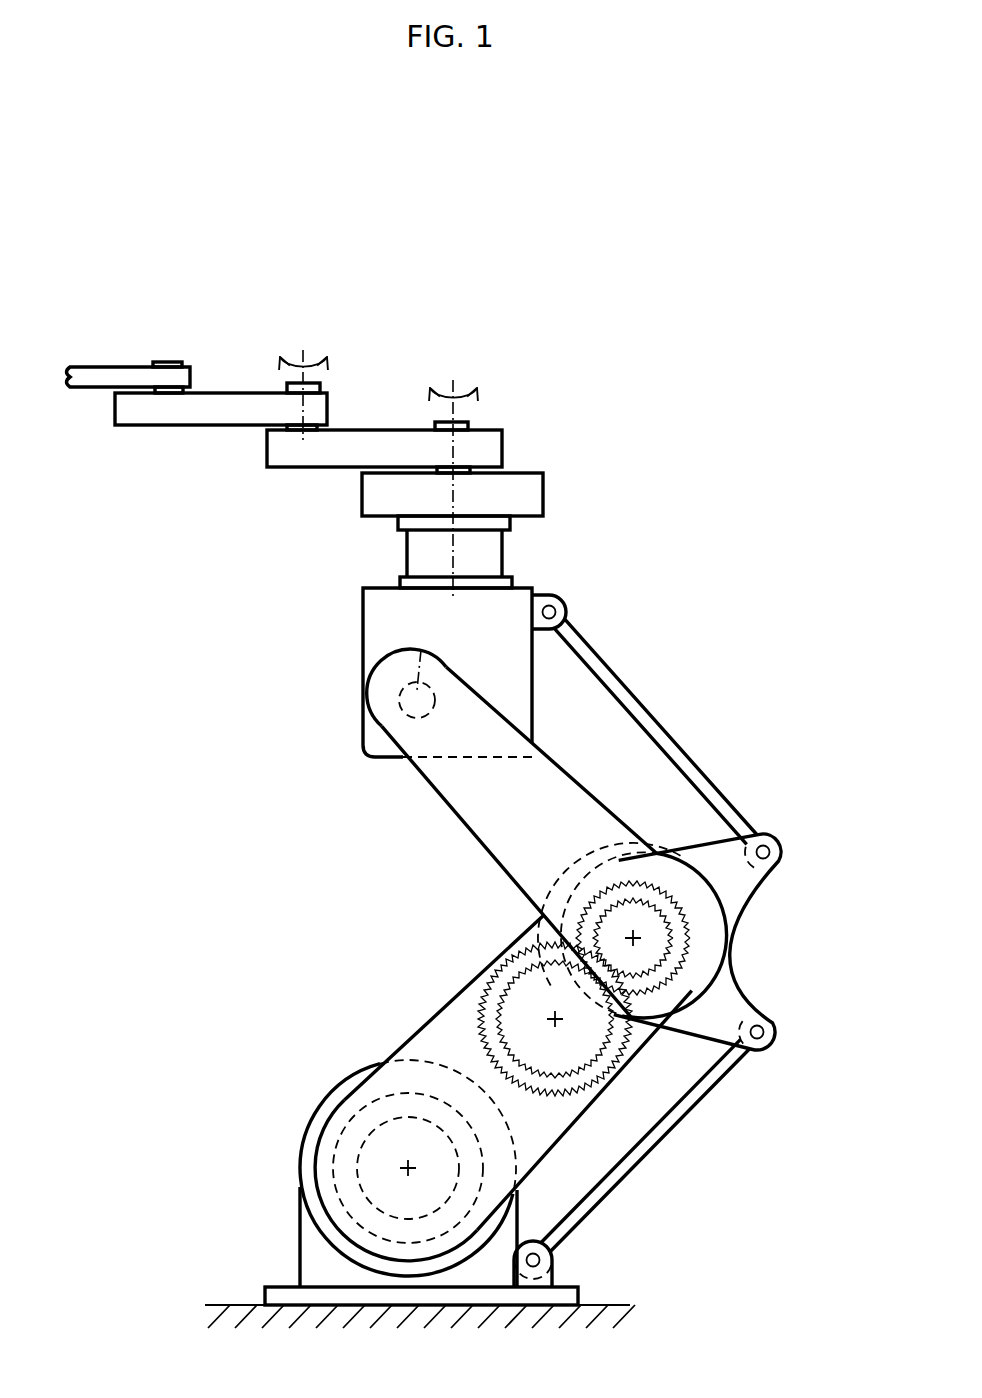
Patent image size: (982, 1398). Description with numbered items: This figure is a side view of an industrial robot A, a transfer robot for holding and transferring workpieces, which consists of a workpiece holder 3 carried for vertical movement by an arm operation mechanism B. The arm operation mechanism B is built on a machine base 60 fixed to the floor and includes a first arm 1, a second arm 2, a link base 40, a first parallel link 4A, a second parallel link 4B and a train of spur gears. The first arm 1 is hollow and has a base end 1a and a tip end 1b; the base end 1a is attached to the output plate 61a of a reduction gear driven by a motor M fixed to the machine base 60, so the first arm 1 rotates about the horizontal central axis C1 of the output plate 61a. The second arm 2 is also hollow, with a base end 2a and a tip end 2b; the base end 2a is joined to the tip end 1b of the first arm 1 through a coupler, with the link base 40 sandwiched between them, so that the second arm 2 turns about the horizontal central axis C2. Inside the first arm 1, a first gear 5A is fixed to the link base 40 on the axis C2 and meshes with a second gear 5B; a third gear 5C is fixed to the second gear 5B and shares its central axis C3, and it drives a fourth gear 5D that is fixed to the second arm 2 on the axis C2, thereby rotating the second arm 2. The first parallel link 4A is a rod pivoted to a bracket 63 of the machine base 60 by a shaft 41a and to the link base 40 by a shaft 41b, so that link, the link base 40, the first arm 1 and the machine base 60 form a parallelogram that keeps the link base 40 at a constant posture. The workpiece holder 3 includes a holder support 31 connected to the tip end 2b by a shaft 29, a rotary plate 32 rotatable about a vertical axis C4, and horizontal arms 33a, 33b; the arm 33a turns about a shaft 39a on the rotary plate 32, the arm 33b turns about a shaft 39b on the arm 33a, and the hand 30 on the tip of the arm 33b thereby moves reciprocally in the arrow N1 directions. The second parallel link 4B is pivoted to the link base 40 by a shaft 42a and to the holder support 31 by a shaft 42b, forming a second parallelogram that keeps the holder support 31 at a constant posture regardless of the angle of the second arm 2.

The hand 30 is at (102, 366).
The arrow directions N1 is at (220, 345).
The horizontal arm 33b is at (240, 393).
The shaft 39b is at (320, 378).
The vertically extending axis C4 is at (460, 388).
The shaft 39a is at (468, 422).
The industrial robot A is at (630, 400).
The horizontal arm 33a is at (500, 441).
The rotary plate 32 is at (540, 492).
The shaft 42b is at (562, 604).
The workpiece holder 3 is at (356, 607).
The shaft 29 is at (429, 666).
The holder support 31 is at (372, 640).
The tip end 2b is at (440, 684).
The second parallel link 4B is at (622, 690).
The arm operation mechanism B is at (733, 778).
The second arm 2 is at (578, 800).
The shaft 42a is at (763, 836).
The first gear 5A is at (578, 866).
The base end 2a is at (674, 878).
The fourth gear 5D is at (575, 893).
The link base 40 is at (735, 903).
The second gear 5B is at (517, 942).
The third gear 5C is at (472, 975).
The tip end 1b is at (700, 952).
The first arm 1 is at (410, 1038).
The central axis C2 is at (636, 941).
The central axis C3 is at (556, 1023).
The base end 1a is at (363, 1115).
The output plate 61a is at (343, 1130).
The motor M is at (300, 1178).
The central axis C1 is at (412, 1171).
The shaft 41b is at (752, 1052).
The first parallel link 4A is at (655, 1148).
The machine base 60 is at (285, 1295).
The shaft 41a is at (552, 1260).
The bracket 63 is at (560, 1280).